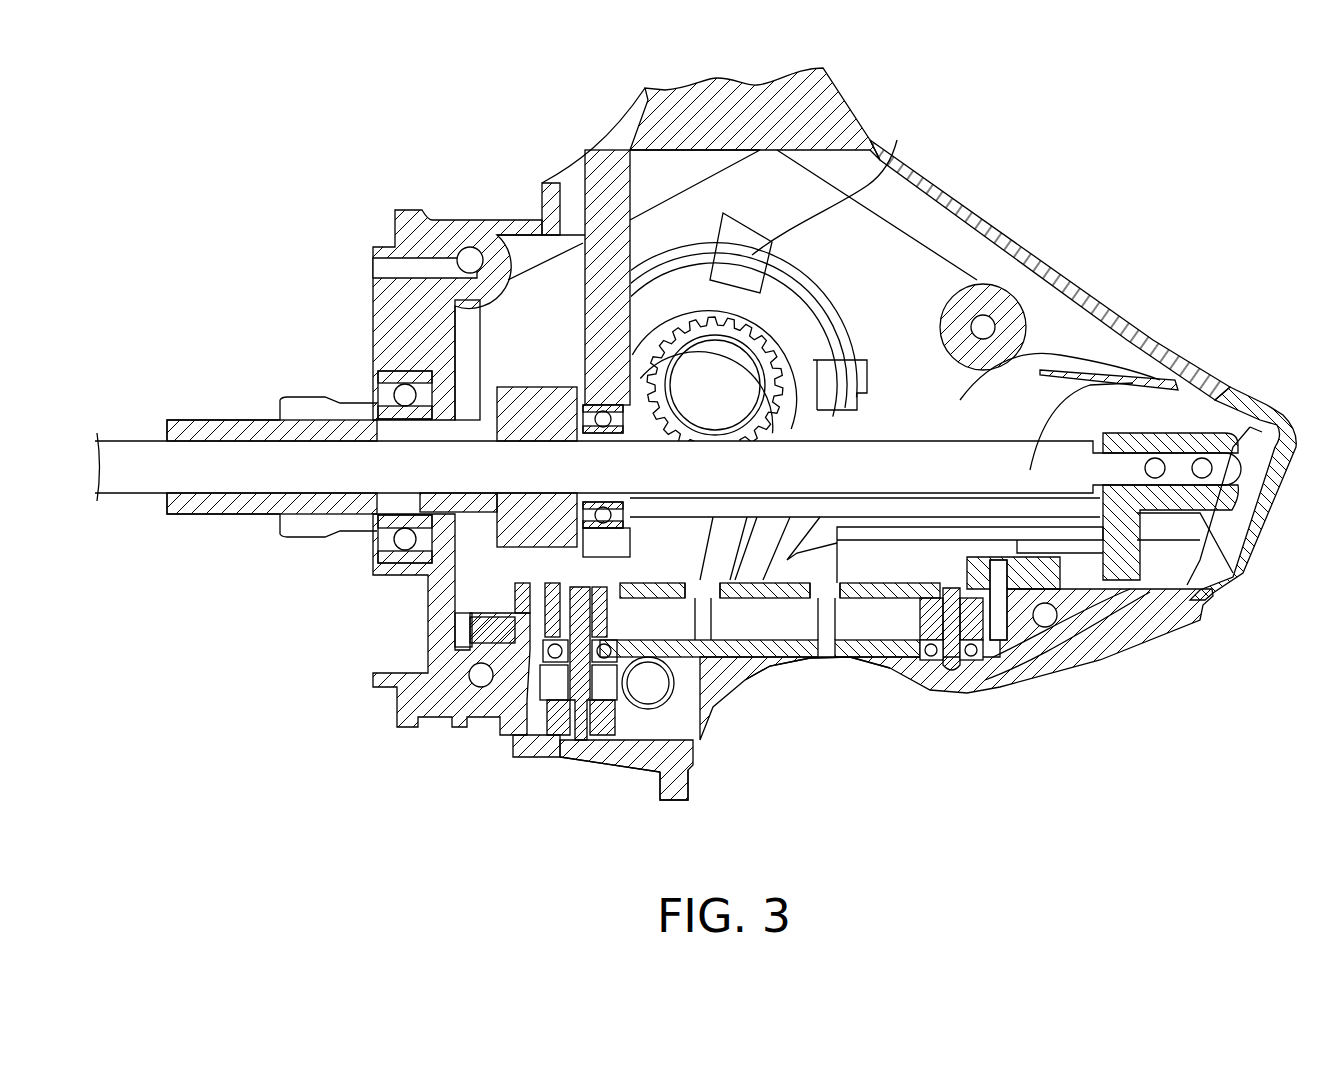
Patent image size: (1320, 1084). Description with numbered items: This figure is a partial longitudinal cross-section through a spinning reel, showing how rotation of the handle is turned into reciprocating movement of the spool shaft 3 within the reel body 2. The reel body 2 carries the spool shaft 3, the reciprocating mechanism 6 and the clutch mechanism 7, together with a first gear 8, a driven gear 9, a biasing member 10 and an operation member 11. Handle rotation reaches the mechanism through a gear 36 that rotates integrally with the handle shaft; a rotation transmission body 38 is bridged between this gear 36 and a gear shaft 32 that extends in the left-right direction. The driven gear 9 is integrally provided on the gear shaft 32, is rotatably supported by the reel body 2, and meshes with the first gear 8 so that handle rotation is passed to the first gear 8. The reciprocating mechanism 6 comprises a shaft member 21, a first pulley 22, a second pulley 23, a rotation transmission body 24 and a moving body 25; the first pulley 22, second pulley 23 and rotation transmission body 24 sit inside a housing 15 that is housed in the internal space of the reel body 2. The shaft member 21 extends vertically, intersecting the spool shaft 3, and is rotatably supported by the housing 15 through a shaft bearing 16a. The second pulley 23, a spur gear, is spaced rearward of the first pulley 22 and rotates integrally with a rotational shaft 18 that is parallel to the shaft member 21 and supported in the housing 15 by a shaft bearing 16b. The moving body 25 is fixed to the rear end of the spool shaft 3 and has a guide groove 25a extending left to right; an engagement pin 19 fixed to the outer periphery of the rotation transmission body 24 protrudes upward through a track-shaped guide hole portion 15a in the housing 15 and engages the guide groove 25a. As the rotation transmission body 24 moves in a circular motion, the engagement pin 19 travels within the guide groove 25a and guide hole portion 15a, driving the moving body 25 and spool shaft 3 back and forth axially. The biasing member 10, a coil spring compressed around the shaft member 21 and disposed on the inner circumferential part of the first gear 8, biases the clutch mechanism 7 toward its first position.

The reel body 2 is at (1110, 302).
The spool shaft 3 is at (1166, 421).
The reciprocating mechanism 6 is at (1238, 433).
The clutch mechanism 7 is at (557, 713).
The first gear 8 is at (533, 717).
The driven gear 9 is at (682, 800).
The biasing member 10 is at (490, 700).
The operation member 11 is at (641, 780).
The housing 15 is at (857, 663).
The guide hole portion 15a is at (1077, 650).
The shaft bearing 16a is at (548, 643).
The shaft bearing 16b is at (975, 660).
The rotational shaft 18 is at (952, 650).
The engagement pin 19 is at (1013, 637).
The shaft member 21 is at (580, 700).
The first pulley 22 is at (550, 607).
The second pulley 23 is at (920, 667).
The rotation transmission body 24 is at (993, 667).
The moving body 25 is at (1263, 437).
The guide groove 25a is at (1120, 637).
The gear shaft 32 is at (652, 685).
The gear 36 is at (760, 333).
The rotation transmission body 38 is at (775, 300).